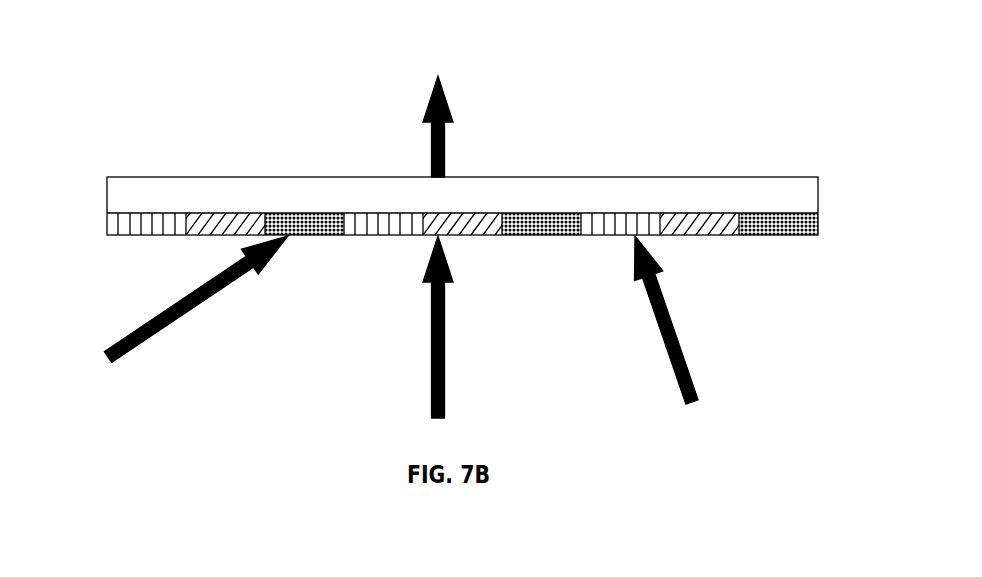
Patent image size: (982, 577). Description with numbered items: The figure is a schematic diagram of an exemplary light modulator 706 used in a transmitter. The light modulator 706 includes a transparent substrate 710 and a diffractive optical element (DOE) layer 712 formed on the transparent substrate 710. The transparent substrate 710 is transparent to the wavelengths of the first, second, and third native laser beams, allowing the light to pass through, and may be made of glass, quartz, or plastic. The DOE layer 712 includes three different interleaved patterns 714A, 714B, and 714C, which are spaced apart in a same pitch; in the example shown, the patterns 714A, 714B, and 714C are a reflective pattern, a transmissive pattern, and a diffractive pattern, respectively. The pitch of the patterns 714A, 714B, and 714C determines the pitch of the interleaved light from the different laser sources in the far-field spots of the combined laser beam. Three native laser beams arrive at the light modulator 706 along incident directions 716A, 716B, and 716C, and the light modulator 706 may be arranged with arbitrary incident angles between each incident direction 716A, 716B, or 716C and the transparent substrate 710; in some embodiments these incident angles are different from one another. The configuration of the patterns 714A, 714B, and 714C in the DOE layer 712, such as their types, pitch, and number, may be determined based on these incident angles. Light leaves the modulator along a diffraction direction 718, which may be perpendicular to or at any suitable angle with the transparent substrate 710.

The light modulator 706 is at (456, 48).
The transparent substrate 710 is at (755, 177).
The diffractive optical element (DOE) layer 712 is at (828, 218).
The first DOE pattern 714A is at (383, 239).
The second DOE pattern 714B is at (467, 240).
The third DOE pattern 714C is at (541, 240).
The first incident direction 716A is at (196, 299).
The second incident direction 716B is at (414, 327).
The third incident direction 716C is at (652, 320).
The diffraction direction 718 is at (418, 126).